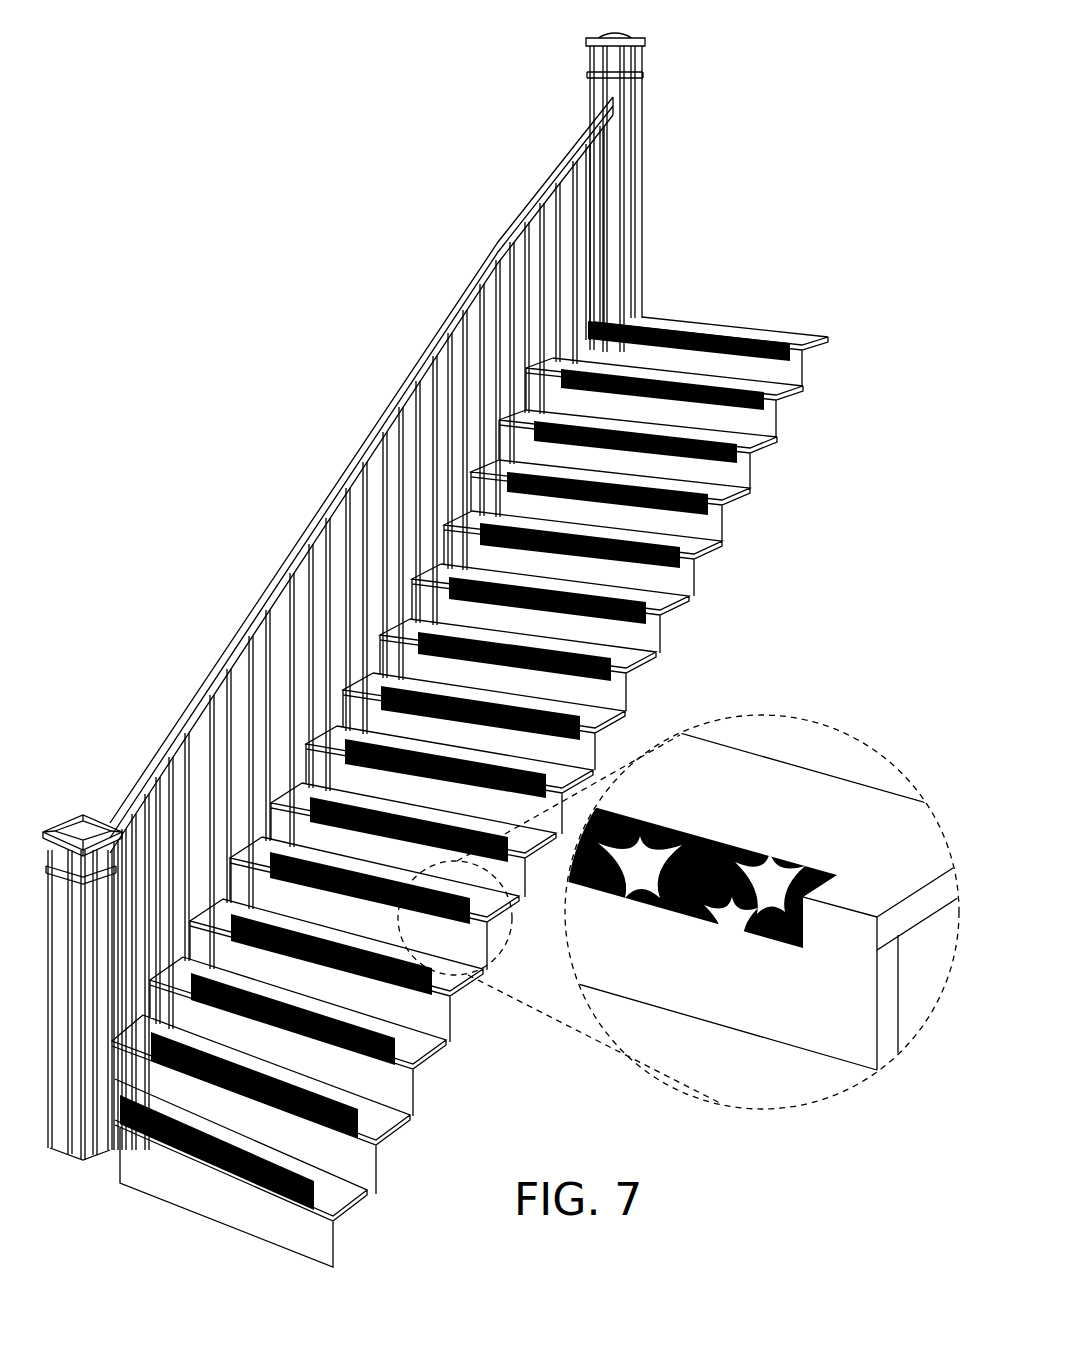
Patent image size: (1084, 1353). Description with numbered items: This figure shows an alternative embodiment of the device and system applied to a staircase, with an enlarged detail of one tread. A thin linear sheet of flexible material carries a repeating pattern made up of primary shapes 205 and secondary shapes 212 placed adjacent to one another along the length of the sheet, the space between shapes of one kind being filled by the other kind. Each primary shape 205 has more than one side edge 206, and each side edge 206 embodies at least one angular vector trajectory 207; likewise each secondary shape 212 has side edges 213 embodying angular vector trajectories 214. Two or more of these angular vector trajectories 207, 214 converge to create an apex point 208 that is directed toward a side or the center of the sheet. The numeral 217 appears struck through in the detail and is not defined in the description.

The primary shape 205 is at (768, 873).
The stair riser 217 is at (708, 931).
The side edge 206 is at (673, 877).
The angular vector trajectory 207 is at (671, 887).
The apex point 208 is at (640, 900).
The secondary shape 212 is at (723, 867).
The side edge 213 is at (747, 935).
The angular vector trajectory 214 is at (731, 921).